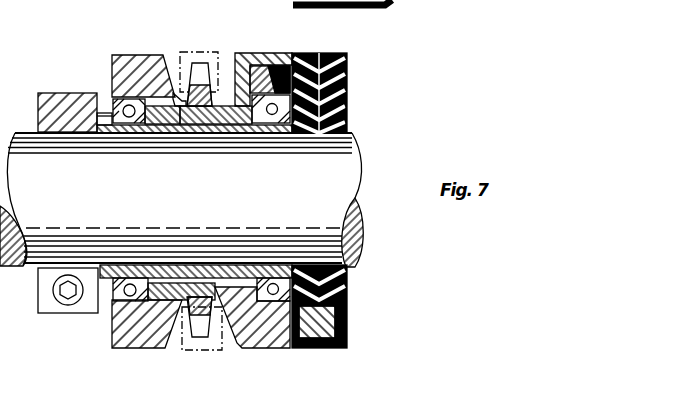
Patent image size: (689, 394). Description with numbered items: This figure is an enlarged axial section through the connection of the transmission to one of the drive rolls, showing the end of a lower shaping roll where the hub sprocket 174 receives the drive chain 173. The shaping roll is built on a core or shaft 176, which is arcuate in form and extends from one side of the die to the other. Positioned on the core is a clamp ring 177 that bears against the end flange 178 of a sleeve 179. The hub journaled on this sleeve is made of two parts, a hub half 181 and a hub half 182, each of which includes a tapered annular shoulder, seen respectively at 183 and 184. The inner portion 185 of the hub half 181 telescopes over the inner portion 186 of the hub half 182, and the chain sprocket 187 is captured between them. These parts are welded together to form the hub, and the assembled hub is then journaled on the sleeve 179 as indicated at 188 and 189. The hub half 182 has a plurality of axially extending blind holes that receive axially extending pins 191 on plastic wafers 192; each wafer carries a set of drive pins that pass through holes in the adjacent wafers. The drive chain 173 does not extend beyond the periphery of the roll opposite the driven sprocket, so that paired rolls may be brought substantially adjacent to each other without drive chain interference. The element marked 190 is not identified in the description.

The drive chain 173 is at (225, 343).
The hub sprocket 174 is at (125, 353).
The core or shaft 176 is at (363, 227).
The clamp ring 177 is at (70, 92).
The end flange 178 is at (105, 113).
The sleeve 179 is at (140, 128).
The hub half 181 is at (138, 55).
The hub half 182 is at (250, 53).
The tapered annular shoulder 183 is at (173, 57).
The tapered annular shoulder 184 is at (220, 53).
The inner portion of hub half 185 is at (177, 110).
The inner portion of hub half 186 is at (202, 117).
The chain sprocket 187 is at (203, 330).
The journal 188 is at (125, 283).
The journal 189 is at (268, 280).
The seal 190 is at (258, 67).
The axially extending pins 191 is at (317, 55).
The plastic wafers 192 is at (345, 100).